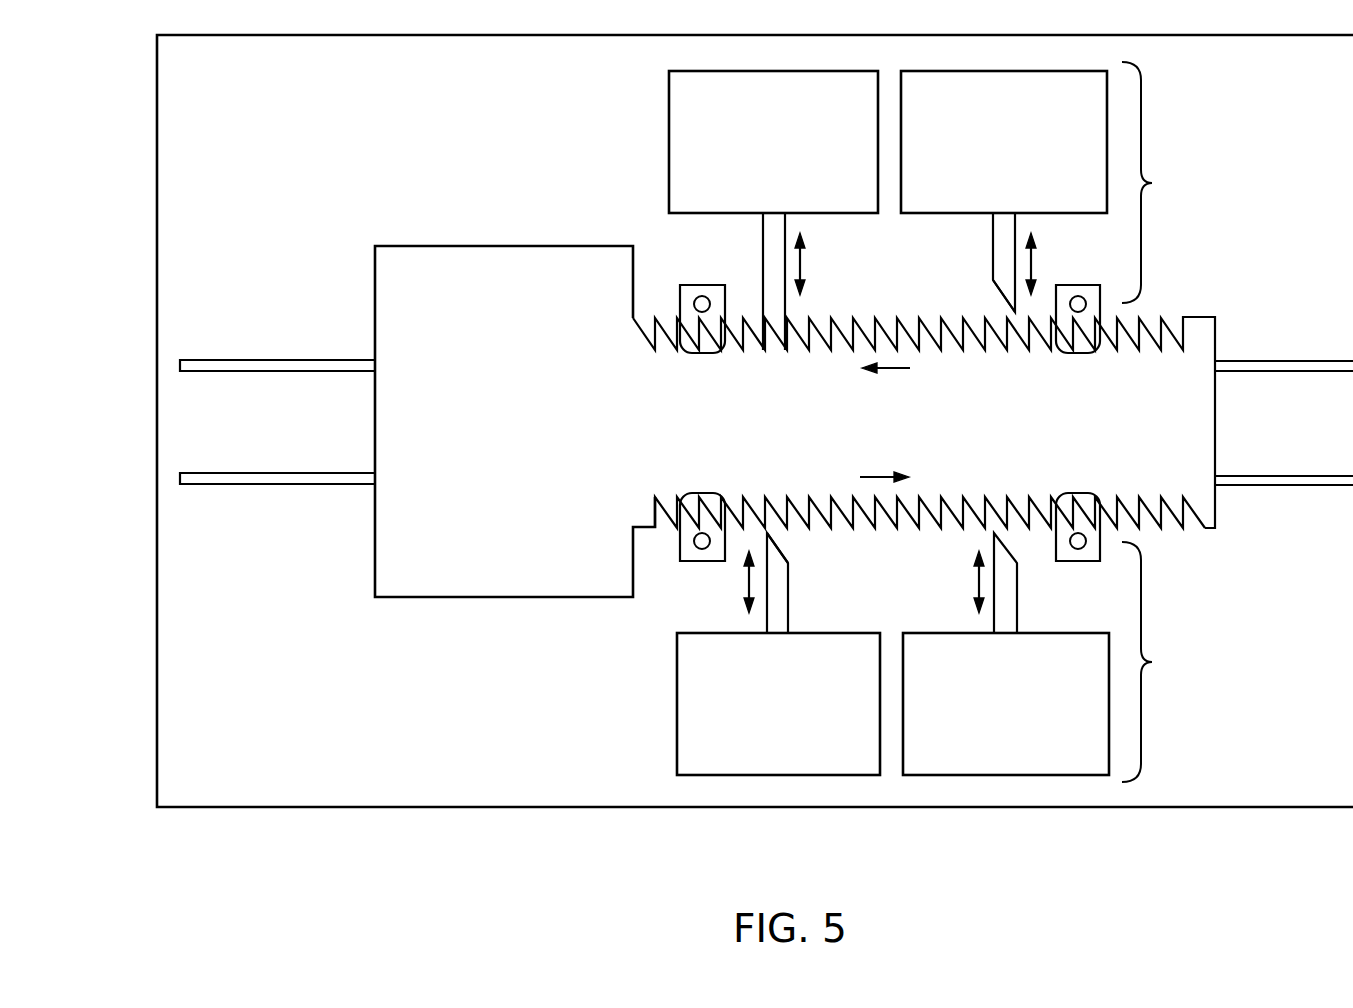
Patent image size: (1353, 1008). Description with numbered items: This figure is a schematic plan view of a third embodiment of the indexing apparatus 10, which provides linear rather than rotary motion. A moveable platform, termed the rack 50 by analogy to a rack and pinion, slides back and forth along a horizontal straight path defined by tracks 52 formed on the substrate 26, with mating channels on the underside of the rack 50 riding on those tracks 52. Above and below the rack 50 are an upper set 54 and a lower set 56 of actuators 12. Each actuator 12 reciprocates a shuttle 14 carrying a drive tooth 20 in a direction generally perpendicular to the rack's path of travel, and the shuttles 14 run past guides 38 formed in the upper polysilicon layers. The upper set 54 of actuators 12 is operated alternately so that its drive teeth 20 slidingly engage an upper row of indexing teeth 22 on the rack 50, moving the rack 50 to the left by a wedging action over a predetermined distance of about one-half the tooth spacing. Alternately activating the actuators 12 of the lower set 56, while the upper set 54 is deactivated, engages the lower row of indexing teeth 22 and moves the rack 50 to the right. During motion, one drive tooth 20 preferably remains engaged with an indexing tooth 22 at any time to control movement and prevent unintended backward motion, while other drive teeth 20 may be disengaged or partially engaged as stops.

The indexing apparatus 10 is at (335, 831).
The actuator 12 is at (760, 165).
The shuttle 14 is at (993, 245).
The drive tooth 20 is at (1002, 297).
The indexing teeth 22 is at (1012, 345).
The substrate 26 is at (203, 760).
The guide 38 is at (695, 283).
The rack 50 is at (497, 435).
The track 52 is at (265, 372).
The upper set of actuators 54 is at (1156, 182).
The lower set of actuators 56 is at (1157, 662).